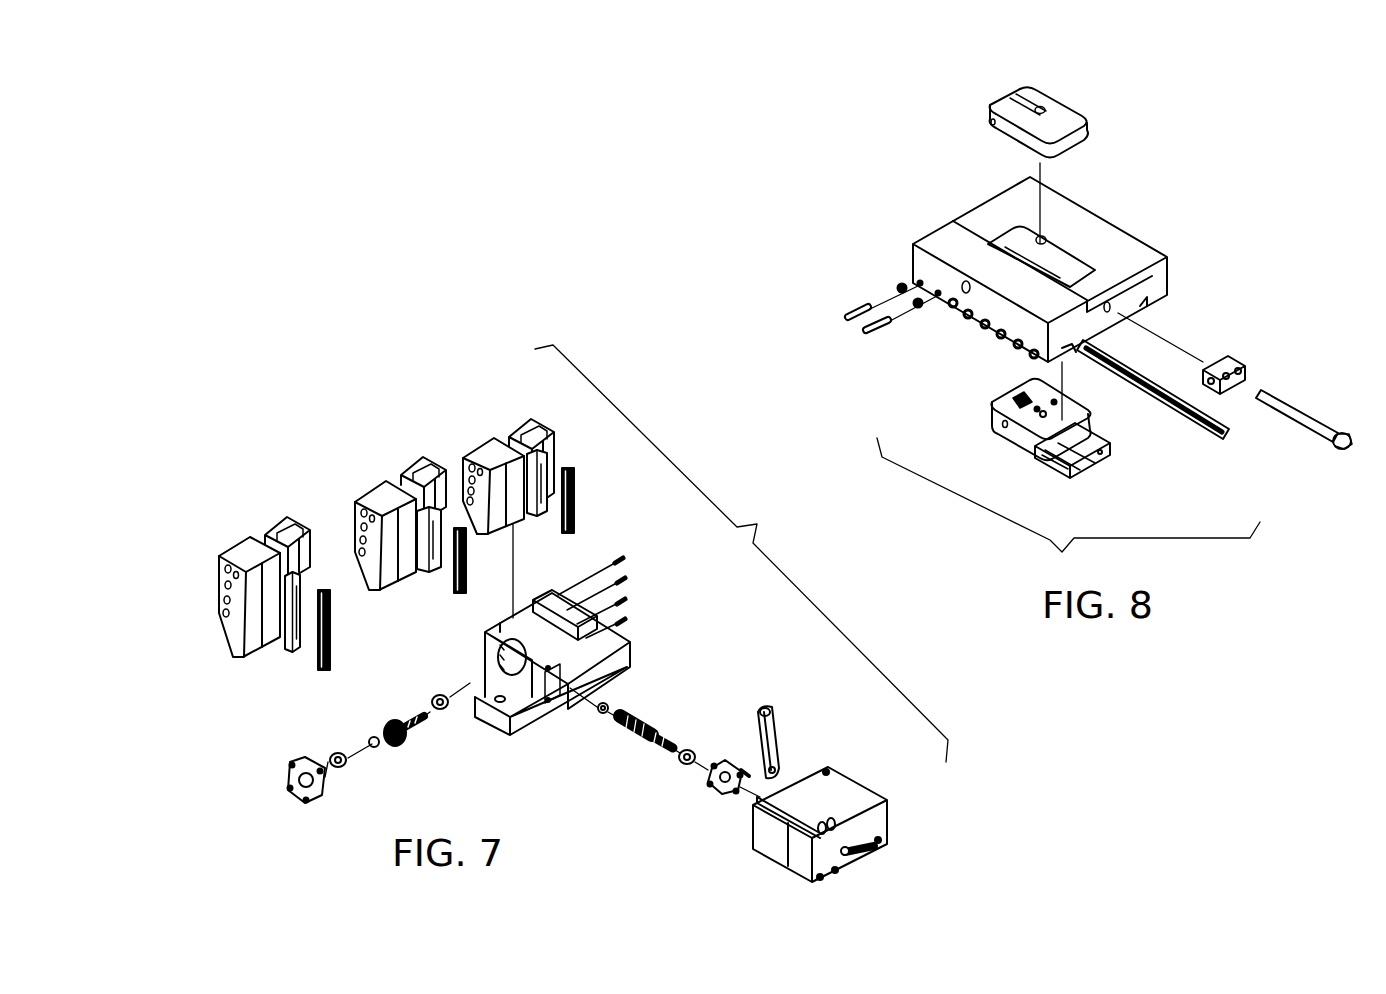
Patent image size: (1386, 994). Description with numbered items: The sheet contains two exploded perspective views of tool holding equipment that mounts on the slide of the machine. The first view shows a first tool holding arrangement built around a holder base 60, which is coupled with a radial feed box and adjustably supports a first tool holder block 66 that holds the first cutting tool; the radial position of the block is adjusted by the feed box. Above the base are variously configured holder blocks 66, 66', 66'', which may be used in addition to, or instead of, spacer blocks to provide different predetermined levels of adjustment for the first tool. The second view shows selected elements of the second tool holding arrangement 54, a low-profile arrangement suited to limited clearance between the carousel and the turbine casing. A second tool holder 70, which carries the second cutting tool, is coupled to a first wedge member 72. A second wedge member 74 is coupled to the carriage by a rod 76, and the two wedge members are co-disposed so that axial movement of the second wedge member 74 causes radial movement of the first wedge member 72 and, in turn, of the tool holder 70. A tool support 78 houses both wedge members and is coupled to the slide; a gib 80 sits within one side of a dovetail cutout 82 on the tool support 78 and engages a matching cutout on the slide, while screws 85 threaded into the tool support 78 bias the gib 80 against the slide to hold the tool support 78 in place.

In FIG. 8, the second tool holding arrangement 54 is at (1233, 169).
In FIG. 7, the holder base 60 is at (588, 670).
In FIG. 7, the first tool holder block 66 is at (274, 533).
In FIG. 7, the holder block 66' is at (410, 469).
In FIG. 7, the holder block 66'' is at (518, 420).
In FIG. 8, the second tool holder 70 is at (1057, 122).
In FIG. 8, the first wedge member 72 is at (992, 398).
In FIG. 8, the second wedge member 74 is at (1090, 466).
In FIG. 8, the rod 76 is at (1298, 430).
In FIG. 8, the tool support 78 is at (1143, 253).
In FIG. 8, the gib 80 is at (1187, 420).
In FIG. 8, the dovetail cutout 82 is at (1068, 350).
In FIG. 8, the screws 85 is at (865, 307).